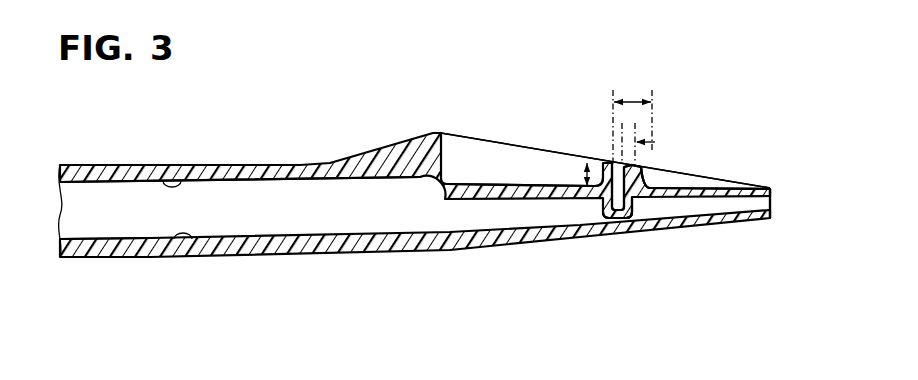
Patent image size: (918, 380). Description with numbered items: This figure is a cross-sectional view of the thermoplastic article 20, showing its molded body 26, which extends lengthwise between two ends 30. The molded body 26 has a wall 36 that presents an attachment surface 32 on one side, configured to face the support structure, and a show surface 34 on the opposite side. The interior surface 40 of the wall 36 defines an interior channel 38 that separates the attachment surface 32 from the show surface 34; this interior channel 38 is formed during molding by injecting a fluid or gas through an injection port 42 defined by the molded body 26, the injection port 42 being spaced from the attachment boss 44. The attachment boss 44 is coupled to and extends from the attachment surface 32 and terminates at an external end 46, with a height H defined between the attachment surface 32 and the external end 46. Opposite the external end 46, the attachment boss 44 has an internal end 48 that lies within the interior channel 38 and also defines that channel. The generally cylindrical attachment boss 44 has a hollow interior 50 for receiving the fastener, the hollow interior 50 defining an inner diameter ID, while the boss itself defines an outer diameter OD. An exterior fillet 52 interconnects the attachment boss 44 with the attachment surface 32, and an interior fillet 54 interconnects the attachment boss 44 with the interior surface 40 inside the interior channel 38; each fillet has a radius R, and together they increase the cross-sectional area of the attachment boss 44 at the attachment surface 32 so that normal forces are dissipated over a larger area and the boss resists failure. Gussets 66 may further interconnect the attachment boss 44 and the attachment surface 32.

The thermoplastic article 20 is at (228, 290).
The molded body 26 is at (290, 255).
The ends 30 is at (749, 262).
The attachment surface 32 is at (498, 186).
The show surface 34 is at (472, 250).
The wall 36 is at (283, 165).
The interior channel 38 is at (80, 222).
The interior surface 40 is at (165, 176).
The injection port 42 is at (780, 197).
The attachment boss 44 is at (650, 165).
The external end 46 is at (585, 148).
The internal end 48 is at (626, 222).
The hollow interior 50 is at (618, 196).
The exterior fillet 52 is at (600, 198).
The interior fillet 54 is at (638, 215).
The gussets 66 is at (483, 182).
The height H is at (600, 161).
The inner diameter ID is at (615, 142).
The outer diameter OD is at (630, 100).
The radius R is at (648, 182).